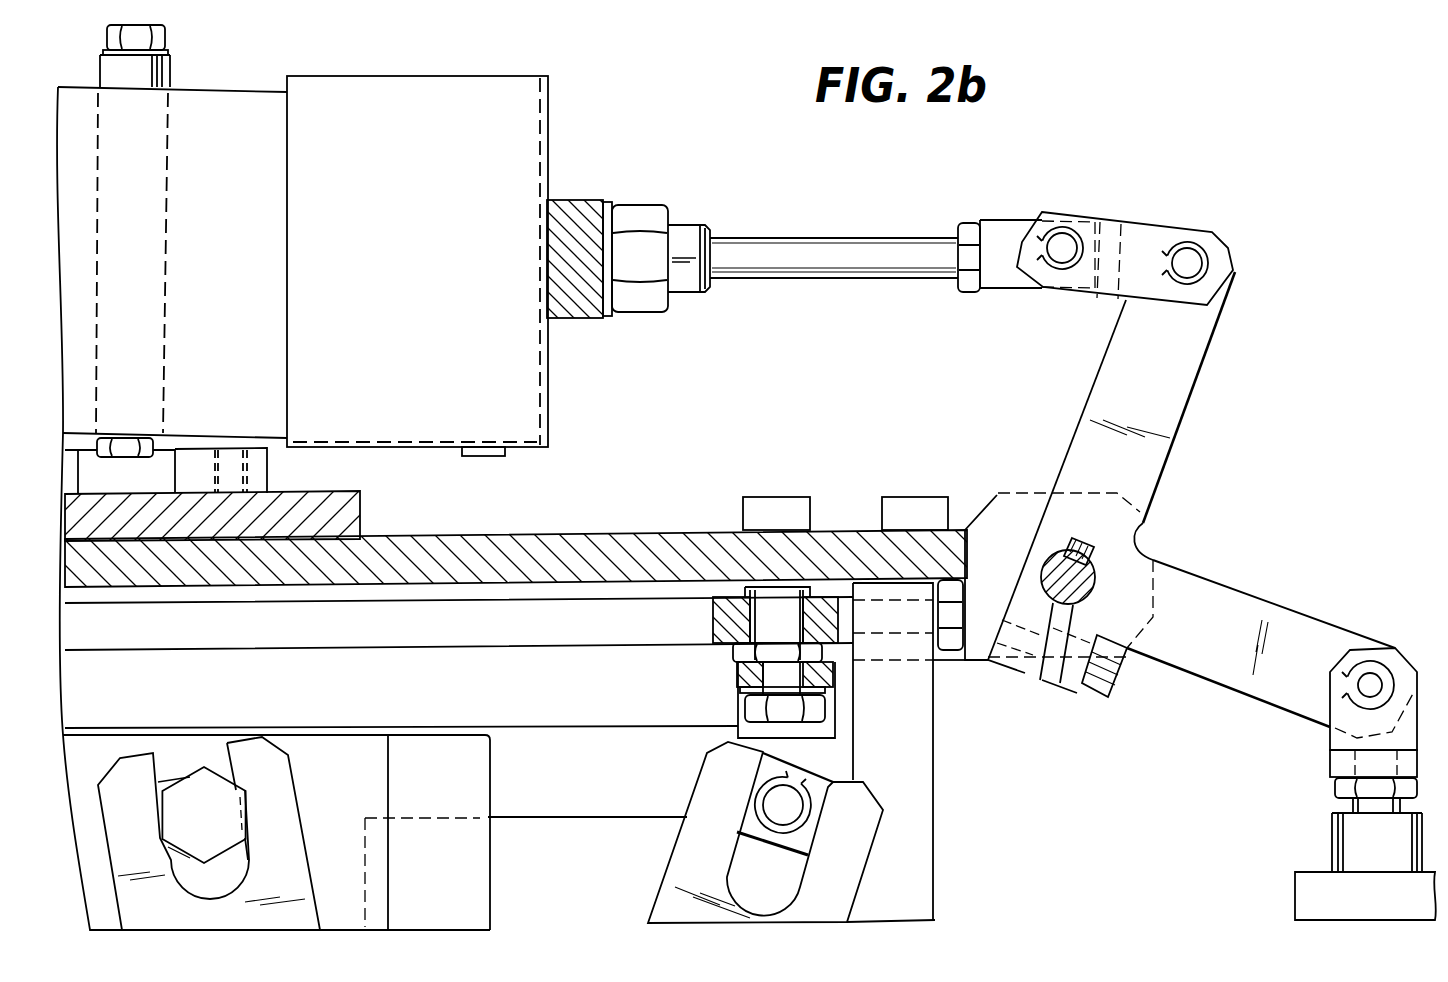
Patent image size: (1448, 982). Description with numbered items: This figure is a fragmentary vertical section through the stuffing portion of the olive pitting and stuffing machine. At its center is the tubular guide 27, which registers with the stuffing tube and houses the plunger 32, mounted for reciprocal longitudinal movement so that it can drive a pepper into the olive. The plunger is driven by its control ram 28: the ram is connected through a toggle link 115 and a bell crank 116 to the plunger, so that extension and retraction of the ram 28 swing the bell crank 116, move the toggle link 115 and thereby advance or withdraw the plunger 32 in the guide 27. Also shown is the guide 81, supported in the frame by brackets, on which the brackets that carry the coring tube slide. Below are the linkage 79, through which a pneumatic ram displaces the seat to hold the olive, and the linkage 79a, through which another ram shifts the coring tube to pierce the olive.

The guide 27 is at (690, 243).
The plunger 32 is at (798, 258).
The toggle link 115 is at (1132, 233).
The bell crank 116 is at (1178, 383).
The guide 81 is at (545, 636).
The linkage 79 is at (282, 783).
The linkage 79a is at (875, 838).
The ram 28 is at (1392, 869).